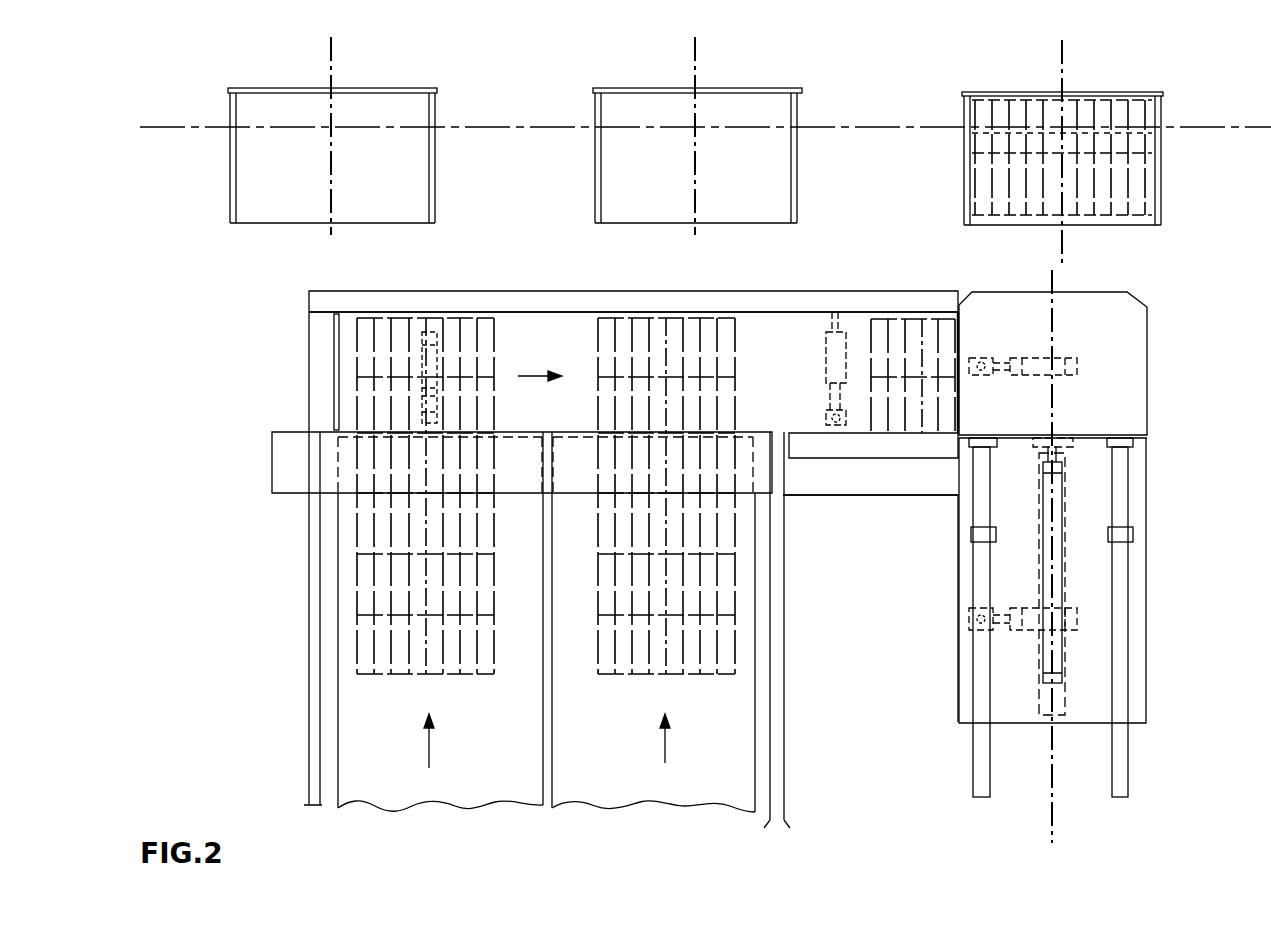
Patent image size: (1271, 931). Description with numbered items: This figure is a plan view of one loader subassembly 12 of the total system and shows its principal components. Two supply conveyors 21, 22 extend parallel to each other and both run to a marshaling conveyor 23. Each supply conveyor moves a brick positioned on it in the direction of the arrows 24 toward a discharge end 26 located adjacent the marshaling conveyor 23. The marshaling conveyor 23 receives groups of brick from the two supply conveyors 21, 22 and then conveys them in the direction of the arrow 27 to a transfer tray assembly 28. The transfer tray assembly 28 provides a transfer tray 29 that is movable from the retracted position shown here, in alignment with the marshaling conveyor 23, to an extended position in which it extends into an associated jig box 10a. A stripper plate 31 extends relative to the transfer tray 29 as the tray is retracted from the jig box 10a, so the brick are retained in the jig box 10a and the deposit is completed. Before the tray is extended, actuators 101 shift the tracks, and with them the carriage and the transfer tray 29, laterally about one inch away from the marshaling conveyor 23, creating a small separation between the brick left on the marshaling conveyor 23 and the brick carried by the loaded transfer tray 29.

The jig box 10a is at (1162, 110).
The loader subassembly 12 is at (870, 522).
The supply conveyor 21 is at (745, 727).
The supply conveyor 22 is at (348, 703).
The marshaling conveyor 23 is at (787, 311).
The arrows 24 is at (432, 742).
The discharge end 26 is at (513, 433).
The arrow 27 is at (530, 375).
The transfer tray assembly 28 is at (1149, 434).
The transfer tray 29 is at (1135, 365).
The stripper plate 31 is at (1095, 433).
The actuators 101 is at (1060, 355).